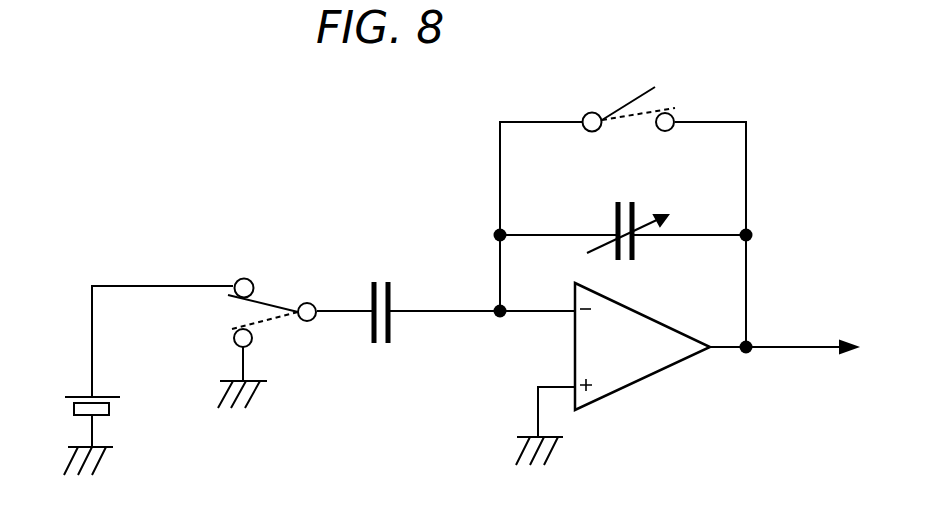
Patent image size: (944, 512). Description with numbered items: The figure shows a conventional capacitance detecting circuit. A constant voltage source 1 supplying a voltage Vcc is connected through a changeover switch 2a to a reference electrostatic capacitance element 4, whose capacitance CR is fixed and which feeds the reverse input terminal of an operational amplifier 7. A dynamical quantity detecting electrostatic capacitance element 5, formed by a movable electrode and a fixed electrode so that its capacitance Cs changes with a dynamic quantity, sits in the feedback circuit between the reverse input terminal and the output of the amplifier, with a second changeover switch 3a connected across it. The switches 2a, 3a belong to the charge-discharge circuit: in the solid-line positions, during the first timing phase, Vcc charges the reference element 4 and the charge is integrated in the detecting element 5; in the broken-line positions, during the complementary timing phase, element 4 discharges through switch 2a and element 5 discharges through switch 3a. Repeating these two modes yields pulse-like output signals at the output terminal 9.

The constant voltage source 1 is at (80, 393).
The changeover switch 2a is at (272, 298).
The changeover switch 3a is at (626, 93).
The reference electrostatic capacitance element 4 is at (392, 298).
The dynamical quantity detecting electrostatic capacitance element 5 is at (643, 250).
The operational amplifier 7 is at (628, 390).
The output terminal 9 is at (826, 348).